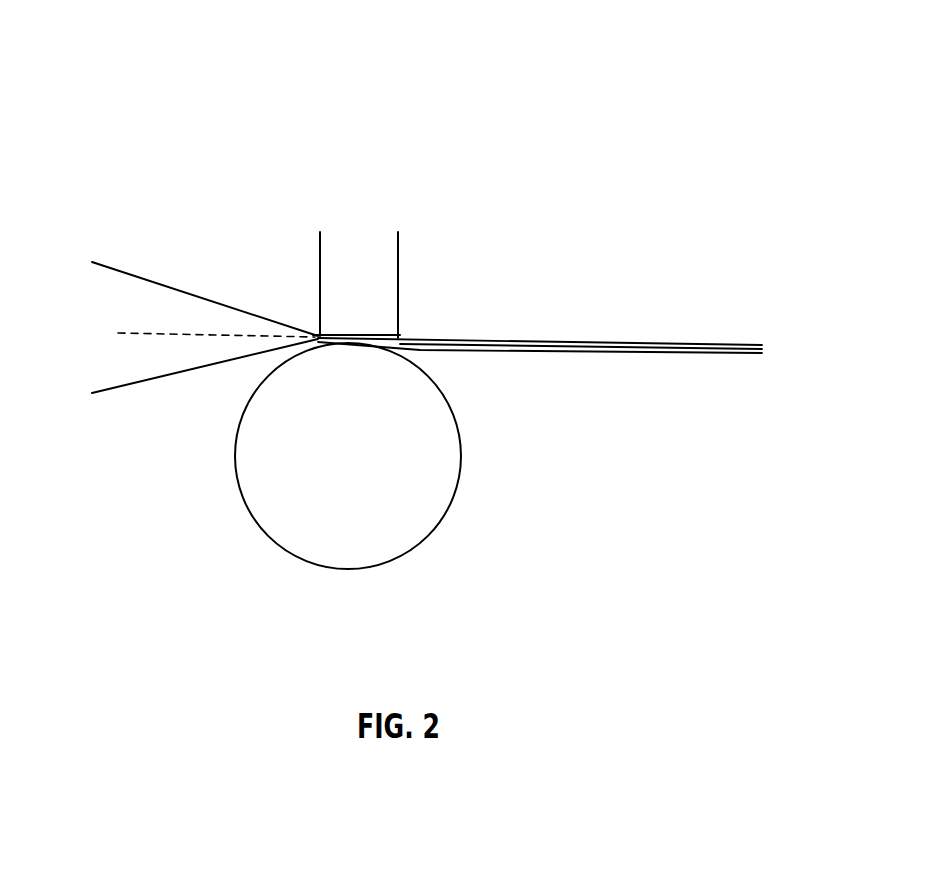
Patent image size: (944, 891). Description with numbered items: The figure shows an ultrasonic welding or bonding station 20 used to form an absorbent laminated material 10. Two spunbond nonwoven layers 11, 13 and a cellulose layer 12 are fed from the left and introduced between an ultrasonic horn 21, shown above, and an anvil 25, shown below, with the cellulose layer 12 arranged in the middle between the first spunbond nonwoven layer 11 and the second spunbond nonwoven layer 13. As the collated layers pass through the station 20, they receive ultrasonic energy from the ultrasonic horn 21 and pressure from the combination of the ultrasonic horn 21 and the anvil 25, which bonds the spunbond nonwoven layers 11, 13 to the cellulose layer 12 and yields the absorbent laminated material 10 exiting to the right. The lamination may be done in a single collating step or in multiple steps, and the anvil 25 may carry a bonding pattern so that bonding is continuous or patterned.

The absorbent laminated material 10 is at (540, 324).
The first spunbond nonwoven layer 11 is at (176, 275).
The cellulose layer 12 is at (185, 328).
The second spunbond nonwoven layer 13 is at (174, 383).
The ultrasonic bonding station 20 is at (421, 285).
The ultrasonic horn 21 is at (363, 257).
The anvil 25 is at (375, 463).